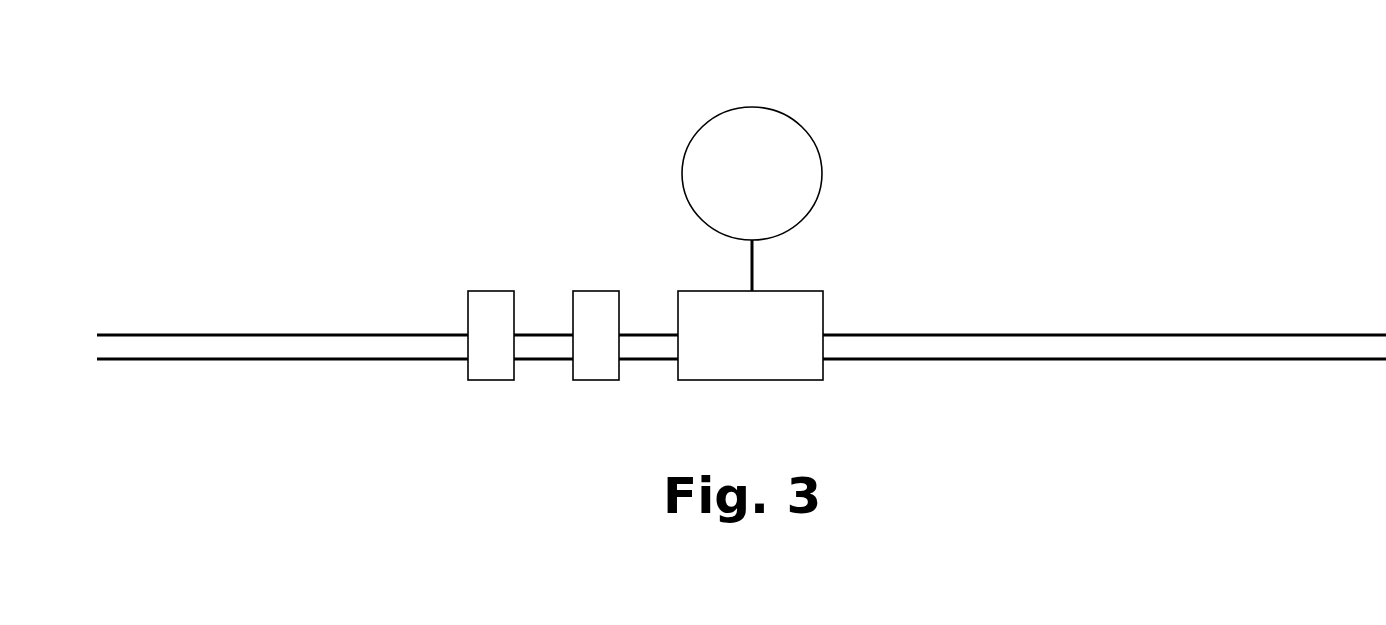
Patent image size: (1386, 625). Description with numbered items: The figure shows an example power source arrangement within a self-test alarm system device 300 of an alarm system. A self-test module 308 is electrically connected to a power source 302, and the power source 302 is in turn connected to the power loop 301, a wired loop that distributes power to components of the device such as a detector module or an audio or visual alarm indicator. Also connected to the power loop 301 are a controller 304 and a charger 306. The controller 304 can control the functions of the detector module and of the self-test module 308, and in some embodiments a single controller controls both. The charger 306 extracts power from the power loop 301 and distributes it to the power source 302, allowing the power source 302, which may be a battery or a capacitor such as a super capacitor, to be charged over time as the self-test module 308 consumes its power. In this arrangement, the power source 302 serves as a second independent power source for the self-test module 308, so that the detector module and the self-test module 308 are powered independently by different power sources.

The self-test alarm system device 300 is at (444, 86).
The power loop 301 is at (337, 333).
The power source 302 is at (705, 290).
The controller 304 is at (492, 290).
The charger 306 is at (597, 290).
The self-test module 308 is at (757, 107).